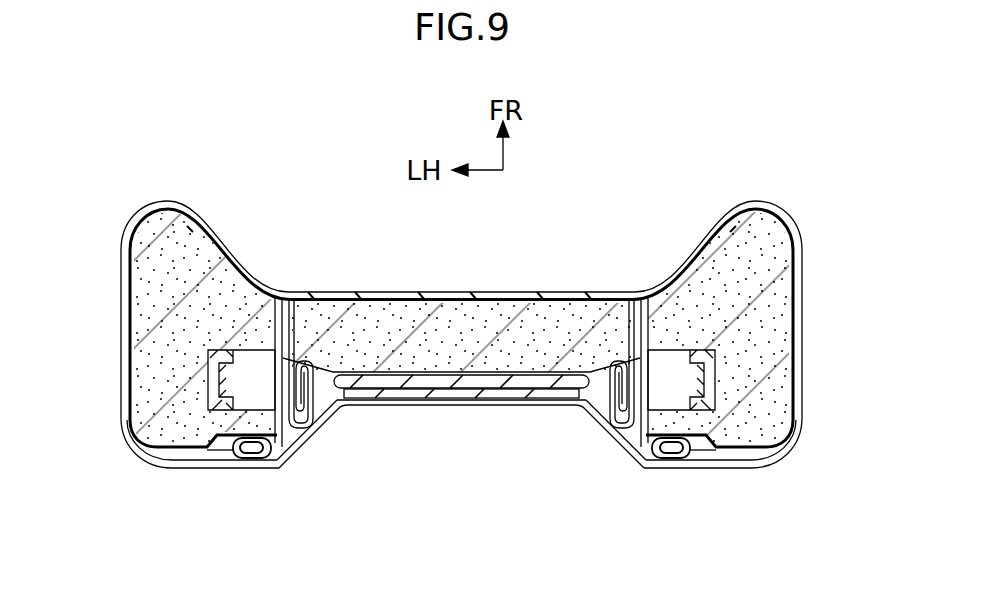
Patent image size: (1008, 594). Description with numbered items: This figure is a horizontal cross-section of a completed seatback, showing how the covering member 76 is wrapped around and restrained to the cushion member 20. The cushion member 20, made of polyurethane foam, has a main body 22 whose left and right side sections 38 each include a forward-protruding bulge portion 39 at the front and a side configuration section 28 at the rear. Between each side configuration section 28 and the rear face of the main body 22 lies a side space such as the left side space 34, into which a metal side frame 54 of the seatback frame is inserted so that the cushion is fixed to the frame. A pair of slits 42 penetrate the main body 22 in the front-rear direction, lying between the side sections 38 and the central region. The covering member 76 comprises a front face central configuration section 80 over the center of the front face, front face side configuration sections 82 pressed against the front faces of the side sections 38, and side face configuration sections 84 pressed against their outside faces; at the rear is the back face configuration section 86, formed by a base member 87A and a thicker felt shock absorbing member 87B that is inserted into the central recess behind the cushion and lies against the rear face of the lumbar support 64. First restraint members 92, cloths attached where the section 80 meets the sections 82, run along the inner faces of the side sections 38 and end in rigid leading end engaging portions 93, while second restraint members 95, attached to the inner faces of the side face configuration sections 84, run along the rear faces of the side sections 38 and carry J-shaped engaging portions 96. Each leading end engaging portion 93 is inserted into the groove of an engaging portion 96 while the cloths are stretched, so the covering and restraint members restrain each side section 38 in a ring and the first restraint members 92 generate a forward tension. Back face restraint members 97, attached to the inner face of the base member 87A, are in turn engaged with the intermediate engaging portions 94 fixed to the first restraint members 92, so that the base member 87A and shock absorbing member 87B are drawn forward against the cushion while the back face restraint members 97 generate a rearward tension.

The cushion member 20 is at (427, 292).
The main body 22 is at (576, 292).
The side configuration section 28 is at (148, 414).
The left side space 34 is at (248, 352).
The side section 38 is at (150, 236).
The bulge portion 39 is at (184, 229).
The slit 42 is at (285, 312).
The side frame 54 is at (218, 372).
The support plate 64 is at (540, 389).
The covering member 76 is at (514, 292).
The front face central configuration section 80 is at (468, 292).
The front face side configuration section 82 is at (213, 230).
The side face configuration section 84 is at (127, 328).
The back face configuration section 86 is at (723, 472).
The base member 87A is at (466, 406).
The shock absorbing member 87B is at (386, 399).
The first restraint member 92 is at (296, 362).
The leading end engaging portion 93 is at (293, 338).
The intermediate engaging portion 94 is at (297, 448).
The second restraint member 95 is at (208, 460).
The engaging portion 96 is at (266, 460).
The back face restraint member 97 is at (327, 432).